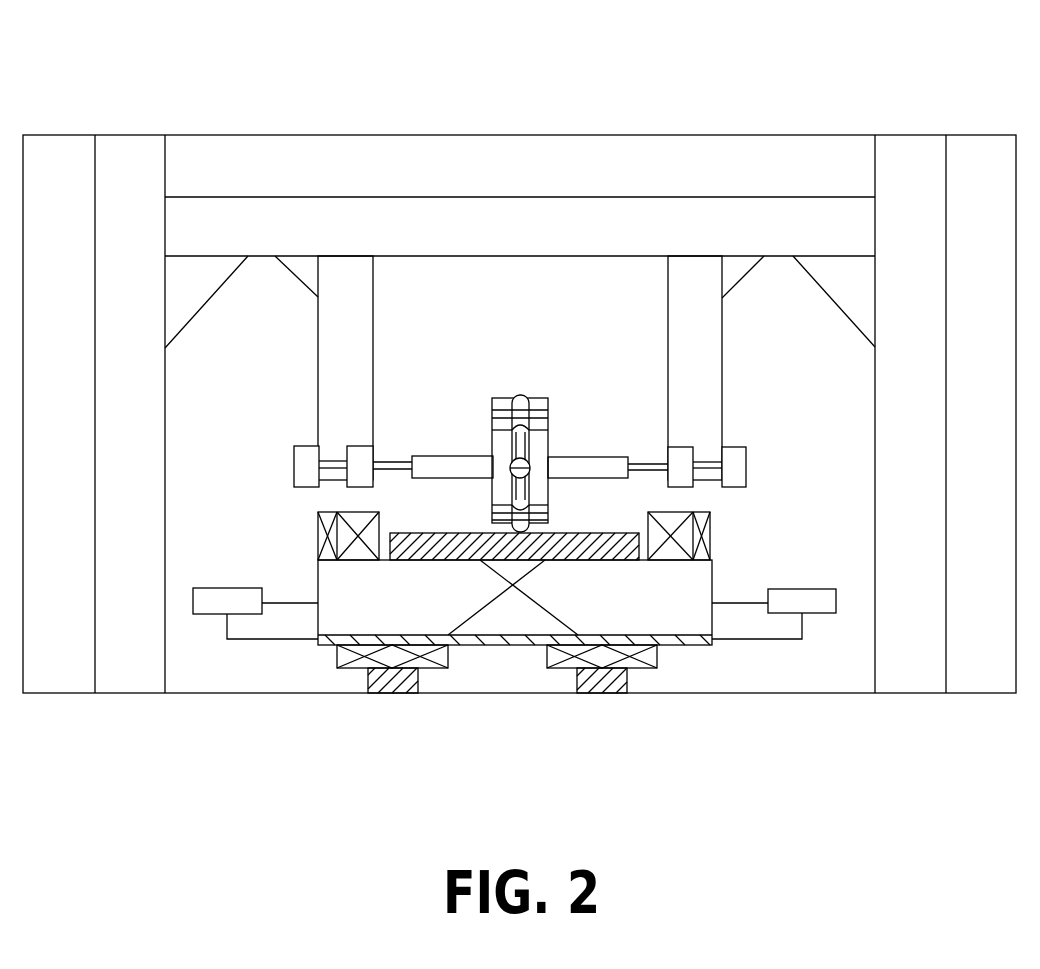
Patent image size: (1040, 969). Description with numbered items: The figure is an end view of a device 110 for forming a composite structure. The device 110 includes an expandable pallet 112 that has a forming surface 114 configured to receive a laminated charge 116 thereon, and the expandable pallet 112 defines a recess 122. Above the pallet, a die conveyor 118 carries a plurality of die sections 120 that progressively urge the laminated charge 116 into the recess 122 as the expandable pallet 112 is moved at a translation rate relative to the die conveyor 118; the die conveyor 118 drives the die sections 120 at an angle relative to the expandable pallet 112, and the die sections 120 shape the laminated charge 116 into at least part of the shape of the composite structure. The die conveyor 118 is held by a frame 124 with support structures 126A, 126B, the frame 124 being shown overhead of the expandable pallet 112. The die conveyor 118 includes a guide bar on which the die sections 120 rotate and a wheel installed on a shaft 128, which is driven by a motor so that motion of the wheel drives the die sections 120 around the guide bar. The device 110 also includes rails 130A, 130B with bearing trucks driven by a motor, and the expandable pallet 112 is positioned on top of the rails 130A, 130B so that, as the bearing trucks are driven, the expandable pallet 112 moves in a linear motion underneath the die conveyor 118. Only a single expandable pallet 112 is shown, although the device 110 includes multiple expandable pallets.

The device 110 is at (365, 93).
The expandable pallet 112 is at (347, 608).
The forming surface 114 is at (385, 553).
The laminated charge 116 is at (447, 532).
The die conveyor 118 is at (478, 425).
The die sections 120 is at (553, 447).
The recess 122 is at (515, 570).
The frame 124 is at (213, 133).
The support structure 126A is at (343, 367).
The support structure 126B is at (687, 355).
The shaft 128 is at (646, 462).
The rail 130A is at (350, 668).
The rail 130B is at (632, 672).